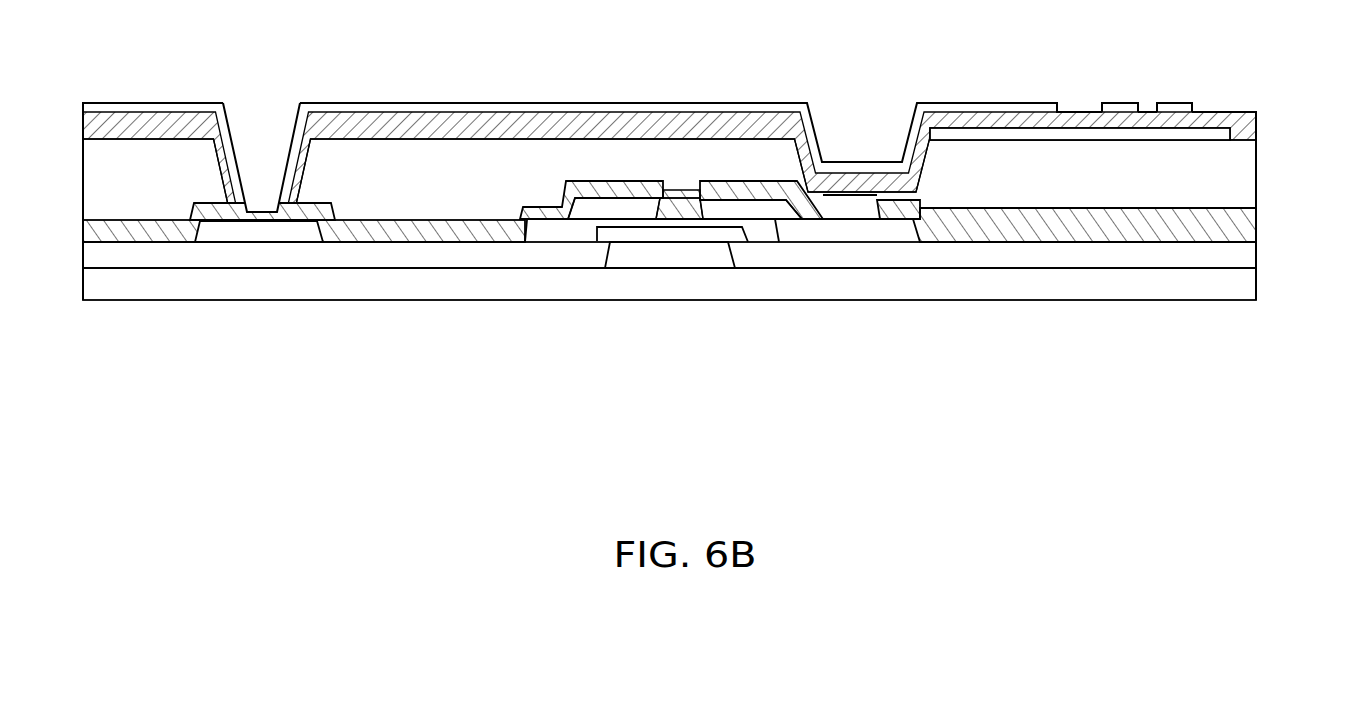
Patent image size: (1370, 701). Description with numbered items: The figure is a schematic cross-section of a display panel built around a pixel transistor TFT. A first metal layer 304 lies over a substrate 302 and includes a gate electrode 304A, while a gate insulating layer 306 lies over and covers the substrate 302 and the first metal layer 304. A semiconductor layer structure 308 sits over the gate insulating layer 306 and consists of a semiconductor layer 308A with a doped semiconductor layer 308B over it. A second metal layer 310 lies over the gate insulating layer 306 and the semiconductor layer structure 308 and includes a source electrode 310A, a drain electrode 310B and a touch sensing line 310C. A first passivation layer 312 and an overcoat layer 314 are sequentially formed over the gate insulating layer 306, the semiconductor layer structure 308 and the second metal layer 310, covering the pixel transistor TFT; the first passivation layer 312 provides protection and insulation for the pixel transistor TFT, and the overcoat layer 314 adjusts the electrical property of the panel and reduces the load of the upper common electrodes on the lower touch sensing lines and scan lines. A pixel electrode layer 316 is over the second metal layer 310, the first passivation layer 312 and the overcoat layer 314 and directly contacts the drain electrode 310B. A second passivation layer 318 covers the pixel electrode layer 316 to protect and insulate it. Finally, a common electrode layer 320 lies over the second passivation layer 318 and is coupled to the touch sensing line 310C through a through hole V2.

The substrate 302 is at (1245, 283).
The gate insulating layer 306 is at (1248, 252).
The first metal layer 304 is at (689, 320).
The gate electrode 304A is at (677, 255).
The first passivation layer 312 is at (1248, 226).
The semiconductor layer structure 308 is at (681, 121).
The semiconductor layer 308A is at (583, 208).
The doped semiconductor layer 308B is at (694, 134).
The second metal layer 310 is at (579, 292).
The source electrode 310A is at (548, 228).
The drain electrode 310B is at (893, 230).
The touch sensing line 310C is at (265, 225).
The overcoat layer 314 is at (1248, 172).
The pixel electrode layer 316 is at (1007, 135).
The second passivation layer 318 is at (1248, 124).
The common electrode layer 320 is at (1176, 103).
The through hole V2 is at (327, 112).
The pixel transistor TFT is at (638, 283).